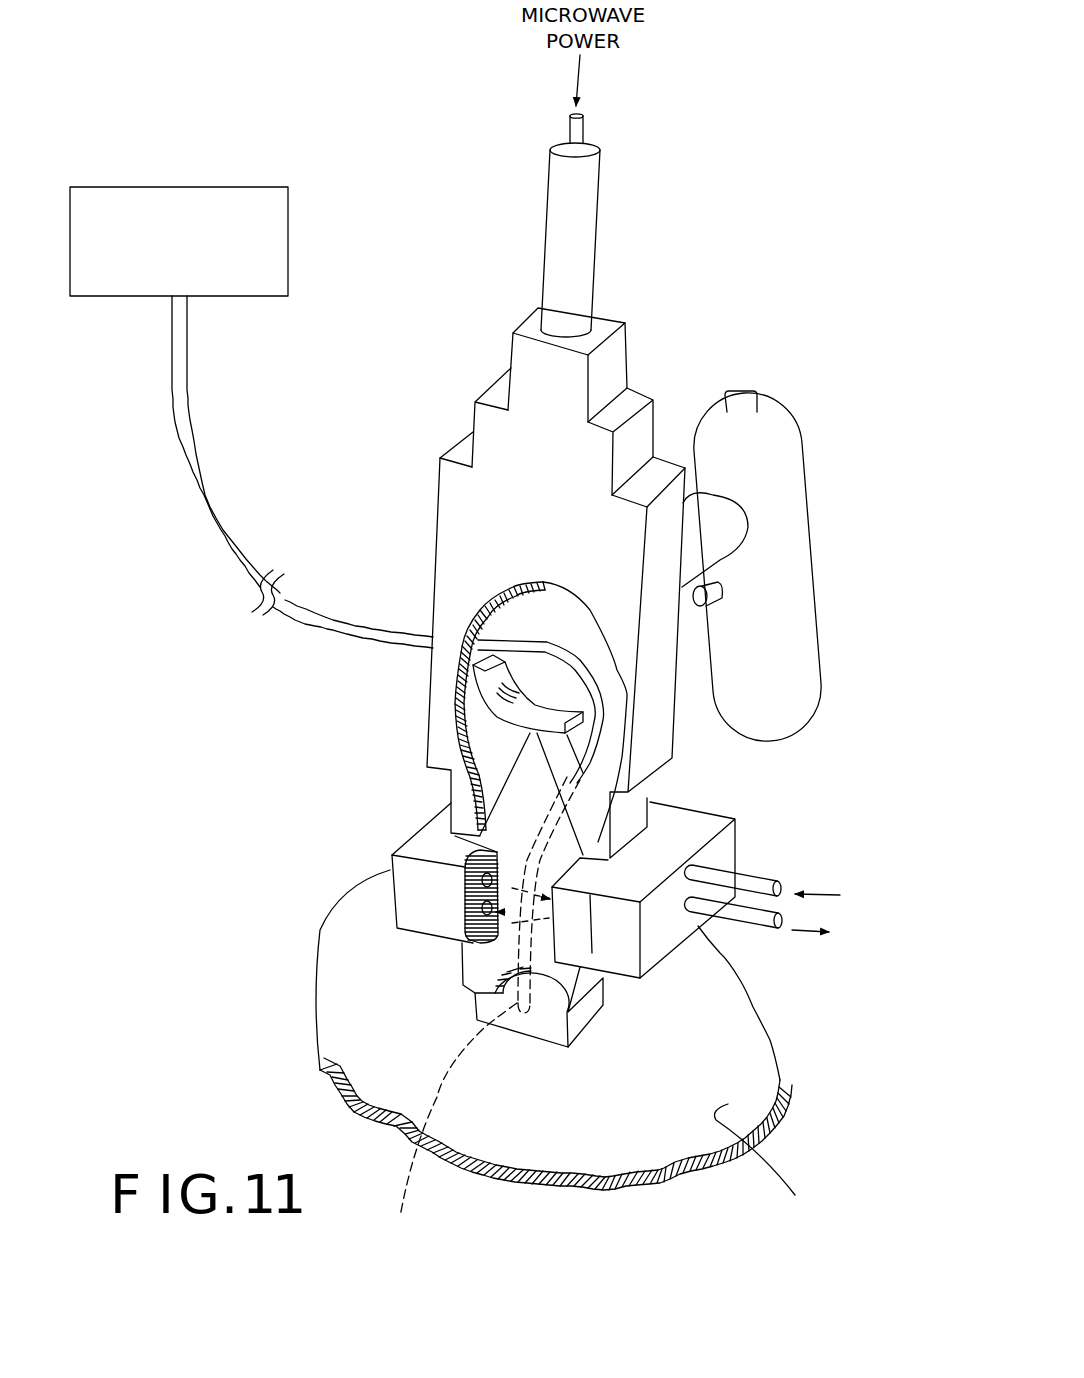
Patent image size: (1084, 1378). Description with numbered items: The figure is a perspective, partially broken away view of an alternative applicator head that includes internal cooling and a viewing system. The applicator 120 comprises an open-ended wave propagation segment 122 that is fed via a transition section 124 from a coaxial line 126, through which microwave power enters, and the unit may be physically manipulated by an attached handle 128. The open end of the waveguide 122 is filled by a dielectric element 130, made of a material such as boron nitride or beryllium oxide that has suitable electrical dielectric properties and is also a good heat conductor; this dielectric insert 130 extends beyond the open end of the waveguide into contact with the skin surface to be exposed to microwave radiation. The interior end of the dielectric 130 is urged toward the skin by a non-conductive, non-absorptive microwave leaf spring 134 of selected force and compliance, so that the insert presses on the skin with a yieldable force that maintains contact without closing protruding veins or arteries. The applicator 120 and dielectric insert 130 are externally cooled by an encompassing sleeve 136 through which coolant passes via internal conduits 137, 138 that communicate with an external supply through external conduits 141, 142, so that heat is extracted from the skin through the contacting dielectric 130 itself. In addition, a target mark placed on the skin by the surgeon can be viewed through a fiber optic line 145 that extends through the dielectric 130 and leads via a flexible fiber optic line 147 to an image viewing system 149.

The applicator 120 is at (842, 724).
The open-ended wave propagation segment 122 is at (583, 992).
The transition section 124 is at (627, 387).
The coaxial line 126 is at (597, 222).
The handle 128 is at (805, 526).
The dielectric element 130 is at (483, 1010).
The leaf spring 134 is at (493, 685).
The encompassing sleeve 136 is at (727, 815).
The internal conduit 137 is at (484, 911).
The internal conduit 138 is at (480, 884).
The external conduit 141 is at (753, 947).
The external conduit 142 is at (760, 867).
The fiber optic line 145 is at (480, 1011).
The flexible fiber optic line 147 is at (196, 455).
The image viewing system 149 is at (289, 224).